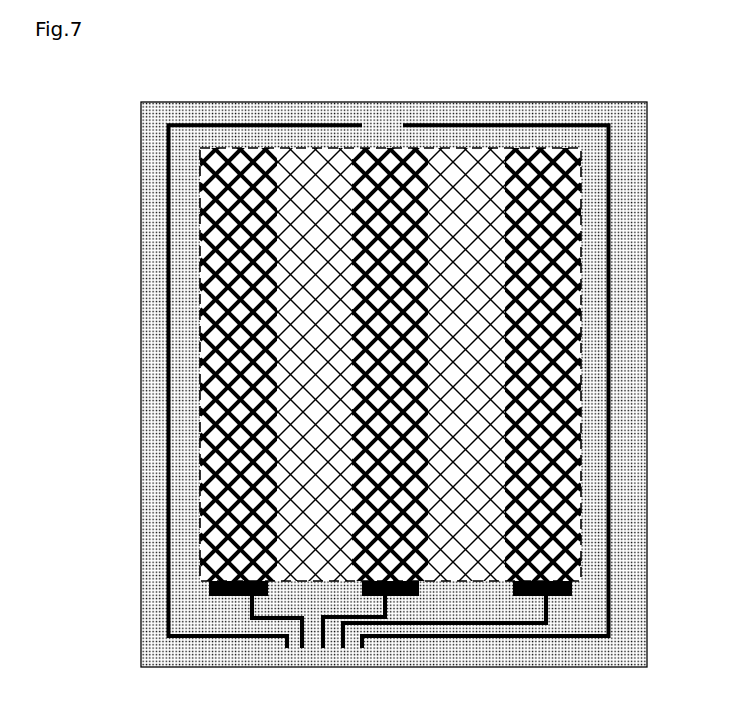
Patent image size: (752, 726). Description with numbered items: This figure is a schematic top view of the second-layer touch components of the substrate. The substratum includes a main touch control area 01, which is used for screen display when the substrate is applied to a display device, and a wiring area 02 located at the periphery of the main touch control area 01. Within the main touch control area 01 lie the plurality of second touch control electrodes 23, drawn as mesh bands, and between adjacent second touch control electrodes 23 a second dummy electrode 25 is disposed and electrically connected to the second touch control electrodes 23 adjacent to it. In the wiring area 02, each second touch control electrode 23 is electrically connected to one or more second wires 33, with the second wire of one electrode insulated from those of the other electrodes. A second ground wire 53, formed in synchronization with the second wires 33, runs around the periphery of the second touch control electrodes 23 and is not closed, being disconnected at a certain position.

The main touch control area 01 is at (581, 150).
The wiring area 02 is at (542, 113).
The second touch control electrodes 23 is at (228, 152).
The second dummy electrode 25 is at (298, 150).
The second wires 33 is at (427, 625).
The second ground wire 53 is at (503, 636).